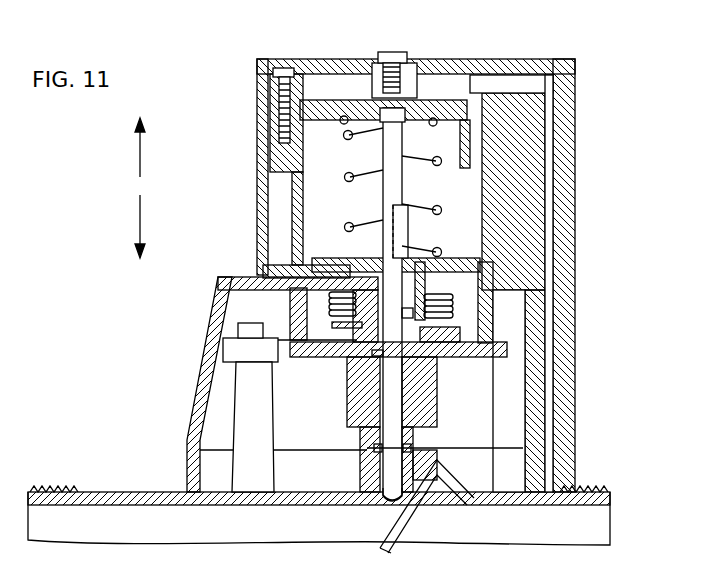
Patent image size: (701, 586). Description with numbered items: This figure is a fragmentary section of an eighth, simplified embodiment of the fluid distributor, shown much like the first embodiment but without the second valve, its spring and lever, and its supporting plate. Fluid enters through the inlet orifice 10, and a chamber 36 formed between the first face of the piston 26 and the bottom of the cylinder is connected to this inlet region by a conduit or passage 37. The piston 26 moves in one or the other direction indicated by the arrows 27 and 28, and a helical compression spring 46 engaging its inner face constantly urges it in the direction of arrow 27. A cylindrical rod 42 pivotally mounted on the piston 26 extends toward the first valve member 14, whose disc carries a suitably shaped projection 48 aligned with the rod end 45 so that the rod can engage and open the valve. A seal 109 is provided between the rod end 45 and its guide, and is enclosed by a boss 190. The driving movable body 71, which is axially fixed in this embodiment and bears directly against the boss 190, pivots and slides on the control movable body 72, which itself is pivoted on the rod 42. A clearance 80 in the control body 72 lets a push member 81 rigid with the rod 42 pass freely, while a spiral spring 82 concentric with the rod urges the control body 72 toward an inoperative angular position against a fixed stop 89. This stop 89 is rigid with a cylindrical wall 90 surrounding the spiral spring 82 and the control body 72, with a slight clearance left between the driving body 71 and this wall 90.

The inlet orifice 10 is at (603, 523).
The first valve member 14 is at (440, 535).
The piston 26 is at (430, 95).
The arrow 27 is at (138, 157).
The arrow 28 is at (138, 213).
The chamber 36 is at (450, 90).
The conduit or passage 37 is at (548, 215).
The rod 42 is at (388, 190).
The rod end 45 is at (385, 497).
The helical compression spring 46 is at (350, 177).
The projection 48 is at (375, 526).
The driving movable body 71 is at (337, 387).
The control movable body 72 is at (438, 393).
The clearance or axial cavity 80 is at (400, 352).
The push member 81 is at (400, 318).
The spiral spring 82 is at (463, 297).
The fixed stop 89 is at (467, 312).
The cylindrical wall 90 is at (287, 310).
The seal 109 is at (423, 445).
The boss 190 is at (367, 455).